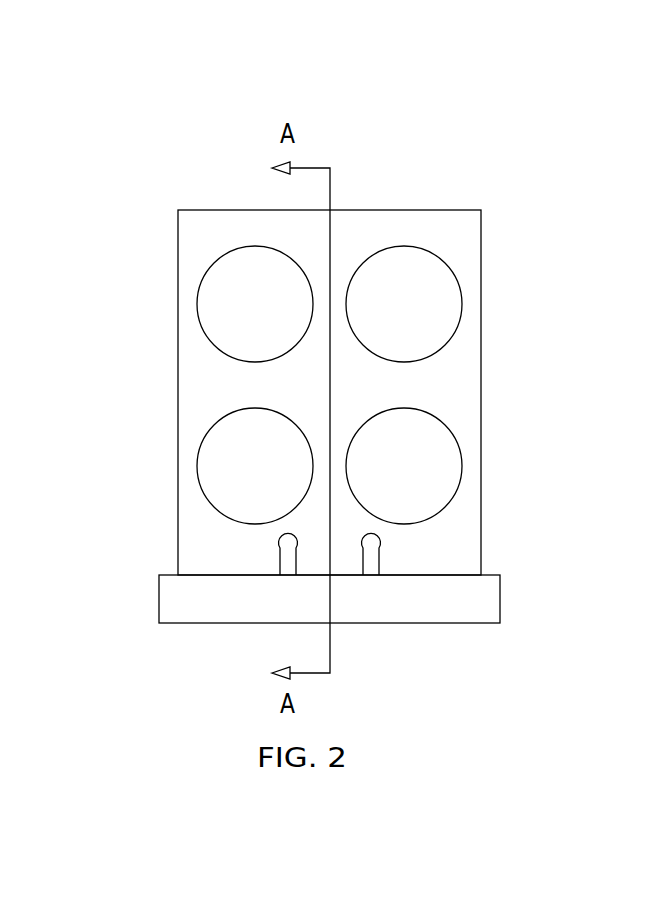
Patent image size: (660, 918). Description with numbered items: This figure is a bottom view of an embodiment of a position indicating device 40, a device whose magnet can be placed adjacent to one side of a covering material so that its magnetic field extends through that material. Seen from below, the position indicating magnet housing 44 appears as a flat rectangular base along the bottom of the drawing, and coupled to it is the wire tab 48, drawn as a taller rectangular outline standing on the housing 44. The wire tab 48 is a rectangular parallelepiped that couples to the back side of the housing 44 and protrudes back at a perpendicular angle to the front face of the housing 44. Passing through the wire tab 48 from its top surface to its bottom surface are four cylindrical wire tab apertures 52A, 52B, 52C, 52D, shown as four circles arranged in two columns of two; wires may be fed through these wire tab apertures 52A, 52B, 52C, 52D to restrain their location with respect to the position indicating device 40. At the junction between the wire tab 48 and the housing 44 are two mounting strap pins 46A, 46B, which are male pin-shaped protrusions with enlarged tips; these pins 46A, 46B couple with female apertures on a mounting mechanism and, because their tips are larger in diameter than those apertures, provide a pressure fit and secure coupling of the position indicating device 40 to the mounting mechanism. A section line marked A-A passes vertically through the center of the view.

The position indicating device 40 is at (353, 126).
The position indicating magnet housing 44 is at (427, 599).
The mounting strap pin 46A is at (288, 545).
The mounting strap pin 46B is at (371, 545).
The wire tab 48 is at (428, 387).
The wire tab aperture 52A is at (233, 283).
The wire tab aperture 52B is at (232, 475).
The wire tab aperture 52C is at (427, 282).
The wire tab aperture 52D is at (427, 475).